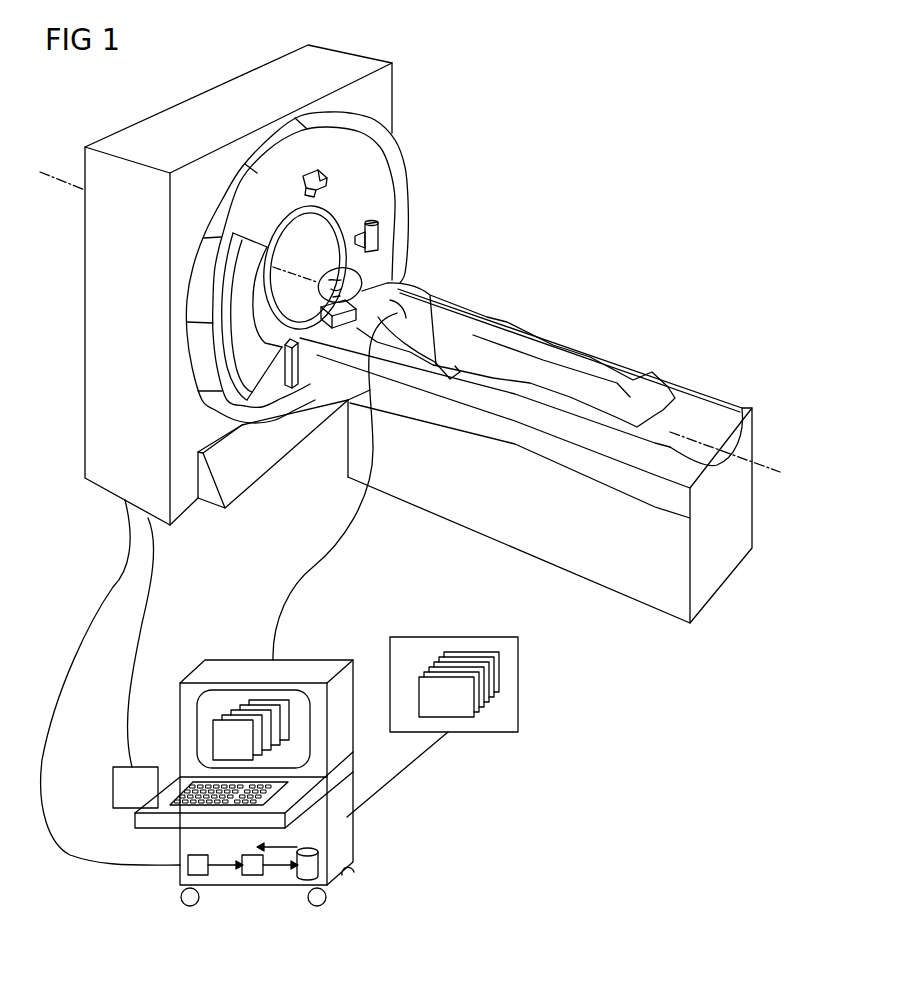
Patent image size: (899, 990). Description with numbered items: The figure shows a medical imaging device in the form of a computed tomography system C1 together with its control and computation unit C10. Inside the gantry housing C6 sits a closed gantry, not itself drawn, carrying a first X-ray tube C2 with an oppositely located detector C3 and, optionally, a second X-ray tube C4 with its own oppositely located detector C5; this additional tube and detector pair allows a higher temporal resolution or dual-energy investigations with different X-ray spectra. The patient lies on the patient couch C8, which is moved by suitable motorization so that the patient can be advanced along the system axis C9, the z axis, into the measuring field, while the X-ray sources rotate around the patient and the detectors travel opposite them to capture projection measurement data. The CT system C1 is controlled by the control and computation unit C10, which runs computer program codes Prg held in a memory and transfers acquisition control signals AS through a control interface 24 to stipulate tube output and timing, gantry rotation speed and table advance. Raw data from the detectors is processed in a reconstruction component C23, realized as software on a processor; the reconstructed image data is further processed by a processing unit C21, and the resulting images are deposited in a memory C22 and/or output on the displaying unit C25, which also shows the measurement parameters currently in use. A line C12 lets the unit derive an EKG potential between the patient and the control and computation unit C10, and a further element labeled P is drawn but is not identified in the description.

The medical imaging device C1 is at (552, 210).
The first X-ray tube C2 is at (380, 237).
The detector C3 is at (250, 377).
The second X-ray tube C4 is at (327, 177).
The detector C5 is at (297, 373).
The gantry housing C6 is at (103, 468).
The patient couch C8 is at (507, 518).
The system axis C9 is at (770, 460).
The control and computation unit C10 is at (280, 807).
The line C12 is at (290, 588).
The processing unit C21 is at (253, 875).
The memory C22 is at (307, 877).
The reconstruction component C23 is at (203, 875).
The displaying unit C25 is at (326, 668).
The patient line P is at (113, 583).
The acquisition control signals AS is at (142, 623).
The control interface 24 is at (113, 785).
The computer program code Prg is at (460, 717).